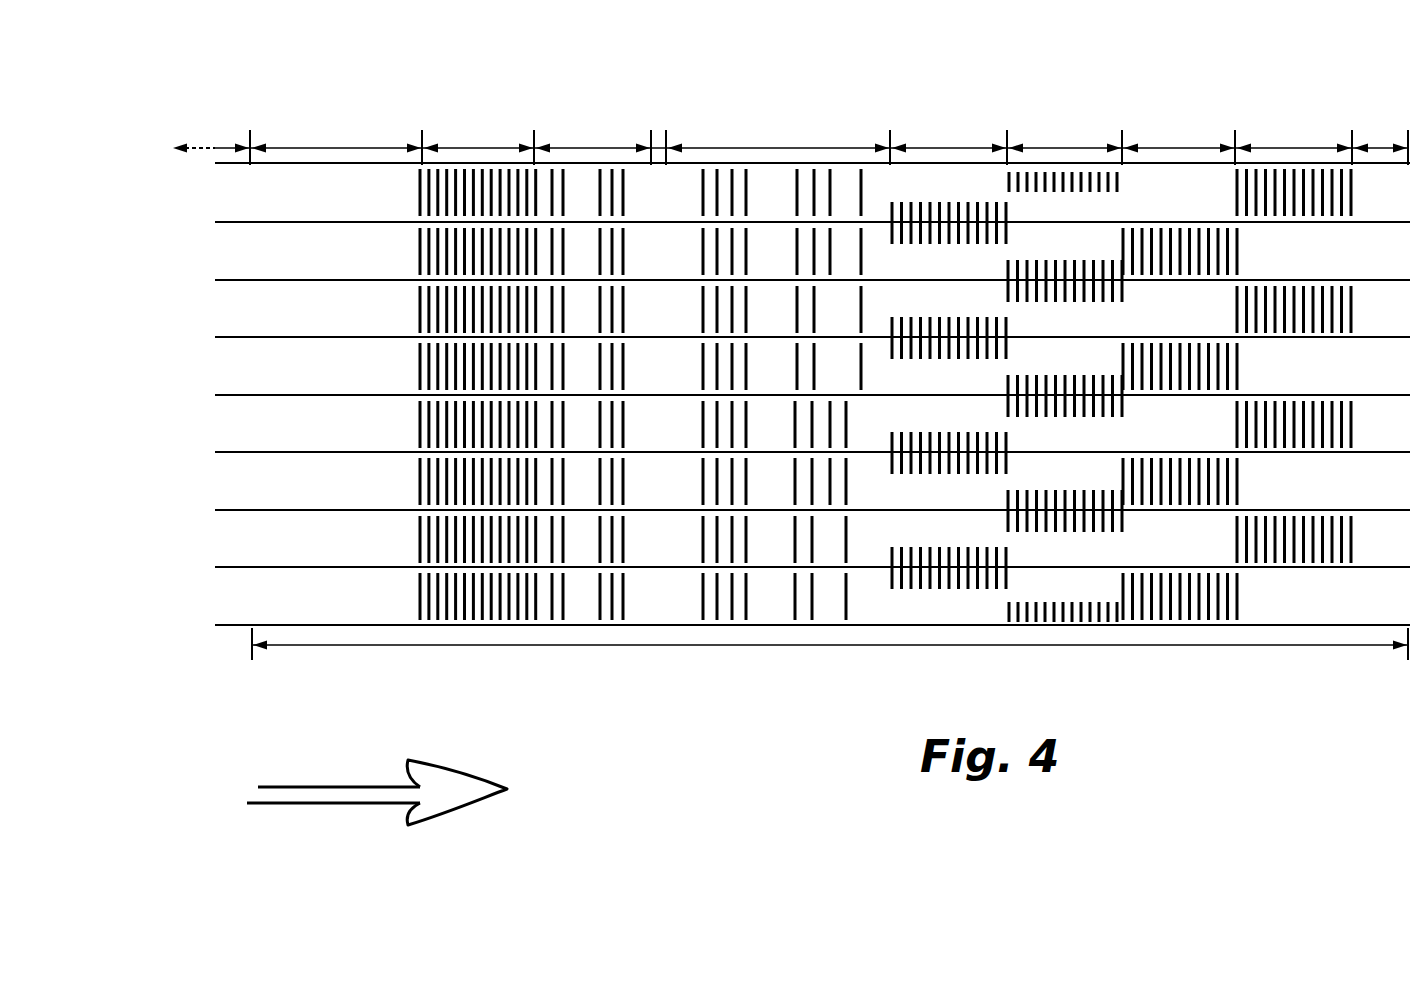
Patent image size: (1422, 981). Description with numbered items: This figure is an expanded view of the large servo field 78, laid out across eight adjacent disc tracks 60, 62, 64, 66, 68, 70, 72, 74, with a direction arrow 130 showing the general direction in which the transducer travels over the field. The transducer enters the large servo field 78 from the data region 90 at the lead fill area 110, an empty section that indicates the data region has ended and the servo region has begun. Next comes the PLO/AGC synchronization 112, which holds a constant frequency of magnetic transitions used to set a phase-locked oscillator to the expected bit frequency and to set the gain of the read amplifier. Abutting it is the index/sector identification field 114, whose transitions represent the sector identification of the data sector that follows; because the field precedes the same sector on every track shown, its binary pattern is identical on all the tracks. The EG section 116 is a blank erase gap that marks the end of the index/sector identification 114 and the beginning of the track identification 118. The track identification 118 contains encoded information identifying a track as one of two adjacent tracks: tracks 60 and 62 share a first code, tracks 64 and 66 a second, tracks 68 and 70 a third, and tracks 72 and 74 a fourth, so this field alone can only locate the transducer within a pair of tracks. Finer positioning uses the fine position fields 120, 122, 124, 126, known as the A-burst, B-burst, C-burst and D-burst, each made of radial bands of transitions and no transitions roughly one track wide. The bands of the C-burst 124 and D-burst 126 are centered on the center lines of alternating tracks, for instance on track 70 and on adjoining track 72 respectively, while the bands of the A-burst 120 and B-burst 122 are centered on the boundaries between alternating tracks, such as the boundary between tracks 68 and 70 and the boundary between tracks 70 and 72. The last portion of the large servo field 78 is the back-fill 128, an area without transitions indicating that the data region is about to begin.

The track 60 is at (226, 202).
The track 62 is at (226, 260).
The track 64 is at (226, 317).
The track 66 is at (226, 375).
The track 68 is at (226, 432).
The track 70 is at (226, 490).
The track 72 is at (226, 547).
The track 74 is at (226, 605).
The large servo field 78 is at (746, 658).
The data region 90 is at (213, 140).
The lead fill area 110 is at (324, 134).
The PLO/AGC synchronization 112 is at (470, 134).
The index/sector identification field 114 is at (591, 134).
The EG section 116 is at (657, 118).
The track identification 118 is at (766, 134).
The fine position field (A-burst) 120 is at (934, 134).
The fine position field (B-burst) 122 is at (1056, 134).
The fine position field (C-burst) 124 is at (1168, 134).
The fine position field (D-burst) 126 is at (1280, 134).
The back-fill 128 is at (1381, 134).
The direction arrow 130 is at (333, 775).